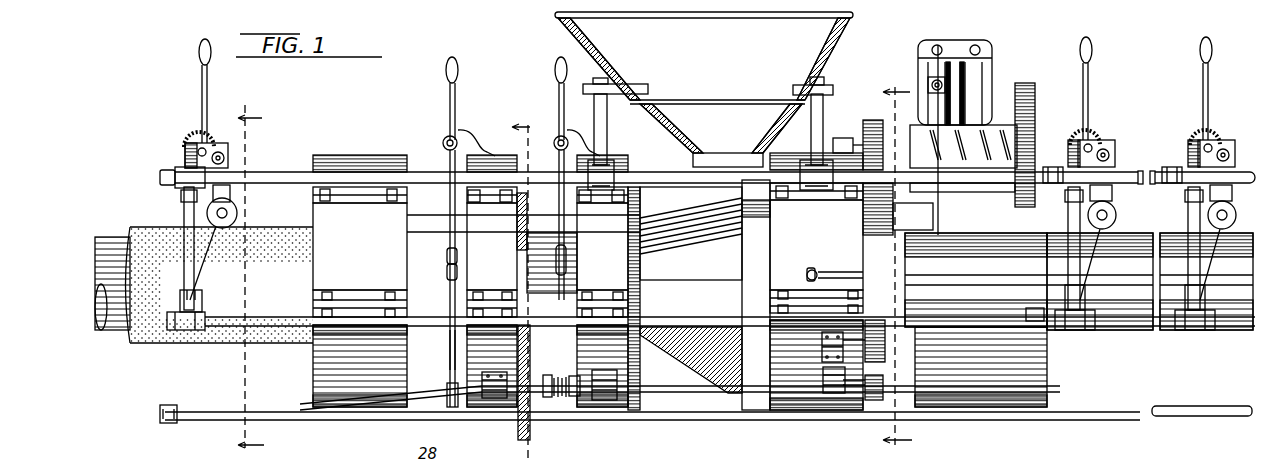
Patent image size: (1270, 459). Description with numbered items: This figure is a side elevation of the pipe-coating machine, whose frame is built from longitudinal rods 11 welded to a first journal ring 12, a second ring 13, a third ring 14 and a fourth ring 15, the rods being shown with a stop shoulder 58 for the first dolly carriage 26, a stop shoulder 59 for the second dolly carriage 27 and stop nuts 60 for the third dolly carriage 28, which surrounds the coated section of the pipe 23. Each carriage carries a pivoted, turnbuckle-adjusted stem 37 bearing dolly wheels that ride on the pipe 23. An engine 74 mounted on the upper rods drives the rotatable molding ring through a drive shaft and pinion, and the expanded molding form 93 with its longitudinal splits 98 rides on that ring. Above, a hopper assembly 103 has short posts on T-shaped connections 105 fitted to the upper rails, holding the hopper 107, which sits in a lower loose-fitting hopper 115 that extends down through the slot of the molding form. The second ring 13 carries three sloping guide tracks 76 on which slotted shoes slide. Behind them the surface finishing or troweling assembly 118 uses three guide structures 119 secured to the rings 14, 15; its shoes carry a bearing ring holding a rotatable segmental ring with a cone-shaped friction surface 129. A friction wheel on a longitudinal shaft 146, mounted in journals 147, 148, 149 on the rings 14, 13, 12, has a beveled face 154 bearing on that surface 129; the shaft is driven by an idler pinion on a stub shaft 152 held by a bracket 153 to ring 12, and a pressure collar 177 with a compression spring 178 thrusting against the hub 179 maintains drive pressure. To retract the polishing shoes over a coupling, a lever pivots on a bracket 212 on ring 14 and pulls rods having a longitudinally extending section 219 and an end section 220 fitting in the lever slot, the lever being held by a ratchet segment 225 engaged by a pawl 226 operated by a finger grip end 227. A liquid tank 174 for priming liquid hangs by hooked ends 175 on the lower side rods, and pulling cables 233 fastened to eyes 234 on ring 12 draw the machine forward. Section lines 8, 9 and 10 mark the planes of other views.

The section line 8- 8 is at (259, 280).
The section line 9- 9 is at (905, 262).
The section line 10- 10 is at (539, 291).
The longitudinal rods 11 is at (1102, 421).
The first journal ring 12 is at (802, 251).
The second ring 13 is at (611, 259).
The third ring 14 is at (502, 259).
The fourth ring 15 is at (378, 280).
The pipe 23 is at (1242, 283).
The first dolly carriage 26 is at (1222, 134).
The second dolly carriage 27 is at (1112, 137).
The third dolly carriage 28 is at (182, 144).
The stem 37 is at (242, 210).
The stop shoulder 58 is at (1167, 167).
The stop shoulder 59 is at (1050, 167).
The stop nuts 60 is at (164, 424).
The engine 74 is at (1001, 82).
The sloping guide tracks 76 is at (538, 228).
The expanded molding form 93 is at (703, 273).
The longitudinal splits 98 is at (731, 330).
The hopper assembly 103 is at (847, 71).
The T-shaped connections 105 is at (820, 183).
The hopper 107 is at (758, 56).
The lower loose-fitting hopper 115 is at (755, 131).
The surface finishing or troweling assembly 118 is at (447, 357).
The guide structures 119 is at (423, 232).
The cone-shaped friction surface 129 is at (516, 246).
The longitudinal shaft 146 is at (700, 386).
The journal 147 is at (498, 395).
The journal 148 is at (622, 386).
The journal 149 is at (838, 395).
The stub shaft 152 is at (838, 331).
The bracket 153 is at (824, 351).
The beveled face 154 is at (523, 432).
The liquid tank 174 is at (1035, 366).
The hooked ends 175 is at (1037, 308).
The pressure collar 177 is at (575, 398).
The compression spring 178 is at (557, 395).
The hub 179 is at (538, 382).
The bracket 212 is at (478, 148).
The longitudinally extending section 219 is at (462, 266).
The end section 220 is at (448, 262).
The ratchet segment 225 is at (464, 135).
The pawl 226 is at (458, 95).
The finger grip end 227 is at (458, 68).
The pulling cables 233 is at (832, 278).
The eyes 234 is at (809, 274).